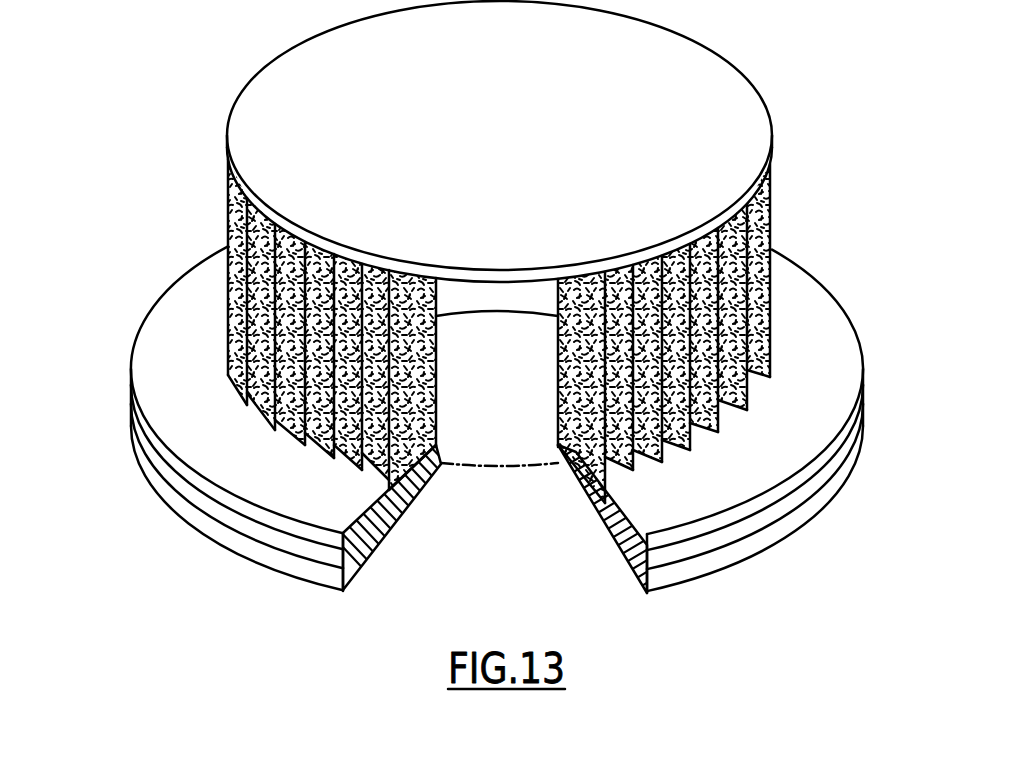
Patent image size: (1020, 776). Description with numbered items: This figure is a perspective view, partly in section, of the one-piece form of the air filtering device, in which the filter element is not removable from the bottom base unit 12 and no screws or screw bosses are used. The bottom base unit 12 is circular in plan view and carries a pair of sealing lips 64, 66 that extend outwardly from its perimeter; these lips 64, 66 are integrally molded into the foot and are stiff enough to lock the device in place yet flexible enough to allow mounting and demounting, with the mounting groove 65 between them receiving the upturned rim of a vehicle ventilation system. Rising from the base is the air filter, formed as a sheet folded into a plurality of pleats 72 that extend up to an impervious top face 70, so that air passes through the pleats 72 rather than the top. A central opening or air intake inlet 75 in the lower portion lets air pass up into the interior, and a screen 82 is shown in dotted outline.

The bottom base unit 12 is at (488, 319).
The mounting lip 64 is at (746, 483).
The mounting groove 65 is at (627, 562).
The mounting lip 66 is at (700, 580).
The top face 70 is at (511, 163).
The pleats 72 is at (283, 410).
The central opening or air intake inlet 75 is at (517, 402).
The screen 82 is at (504, 469).